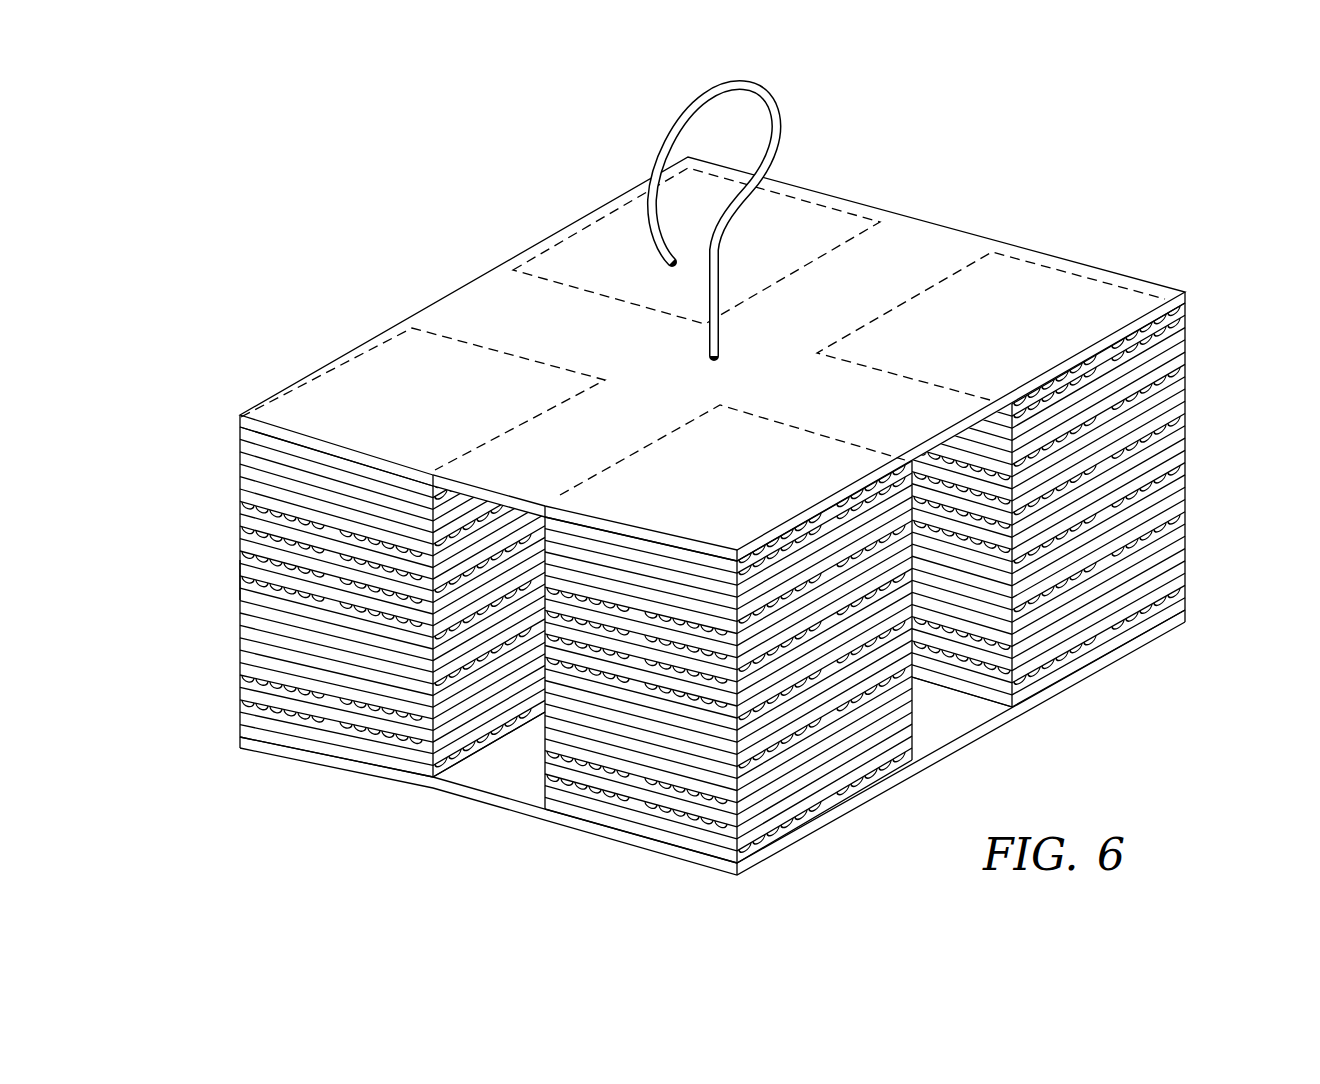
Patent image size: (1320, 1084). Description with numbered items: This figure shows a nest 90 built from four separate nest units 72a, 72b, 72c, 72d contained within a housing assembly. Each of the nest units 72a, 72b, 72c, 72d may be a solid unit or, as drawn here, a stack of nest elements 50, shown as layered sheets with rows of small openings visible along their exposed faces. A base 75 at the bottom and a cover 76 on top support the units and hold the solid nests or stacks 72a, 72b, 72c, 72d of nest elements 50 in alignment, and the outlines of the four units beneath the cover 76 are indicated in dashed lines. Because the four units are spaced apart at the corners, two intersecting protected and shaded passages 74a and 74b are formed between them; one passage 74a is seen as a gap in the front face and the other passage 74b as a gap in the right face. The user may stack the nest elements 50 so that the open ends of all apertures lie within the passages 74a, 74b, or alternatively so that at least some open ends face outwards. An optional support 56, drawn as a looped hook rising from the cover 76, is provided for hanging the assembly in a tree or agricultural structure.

The nest 90 is at (396, 218).
The optional support 56 is at (777, 127).
The cover 76 is at (932, 238).
The nest unit 72a is at (325, 745).
The nest unit 72b is at (608, 826).
The nest unit 72c is at (1100, 655).
The nest unit 72d is at (559, 232).
The passage 74a is at (510, 768).
The passage 74b is at (952, 720).
The base 75 is at (860, 805).
The nest element 50 is at (240, 633).